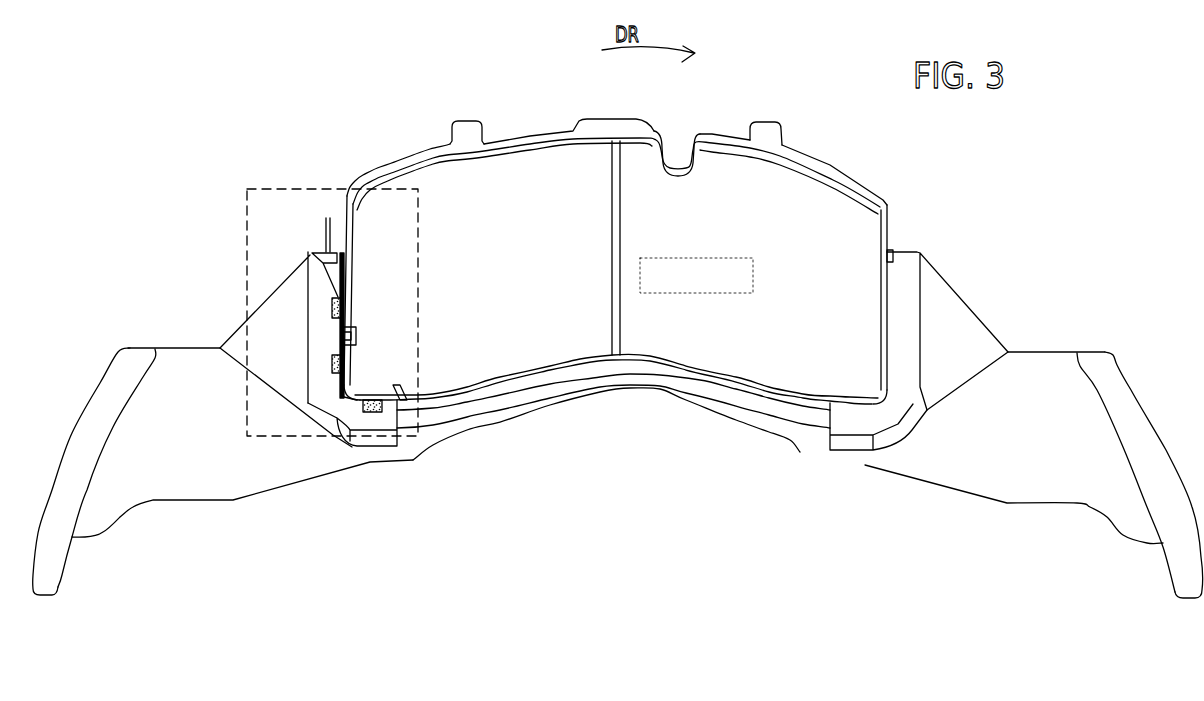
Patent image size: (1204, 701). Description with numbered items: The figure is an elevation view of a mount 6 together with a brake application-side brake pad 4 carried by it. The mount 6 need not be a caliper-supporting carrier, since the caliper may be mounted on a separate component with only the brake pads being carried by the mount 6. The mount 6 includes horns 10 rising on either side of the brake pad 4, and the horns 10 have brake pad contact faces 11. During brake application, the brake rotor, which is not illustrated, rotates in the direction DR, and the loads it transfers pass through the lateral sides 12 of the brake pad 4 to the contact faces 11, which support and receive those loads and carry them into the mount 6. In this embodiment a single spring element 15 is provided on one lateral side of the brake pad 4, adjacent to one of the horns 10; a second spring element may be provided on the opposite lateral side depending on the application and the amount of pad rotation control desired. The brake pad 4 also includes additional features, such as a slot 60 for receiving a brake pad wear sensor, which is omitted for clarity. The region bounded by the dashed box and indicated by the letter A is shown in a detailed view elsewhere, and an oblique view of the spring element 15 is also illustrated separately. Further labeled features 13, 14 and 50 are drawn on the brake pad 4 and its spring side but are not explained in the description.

The brake pad 4 is at (833, 168).
The brake carrier 6 is at (1052, 350).
The carrier arm 10 is at (265, 303).
The abutment surface 11 is at (338, 348).
The backing plate side edge 12 is at (347, 207).
The spring clip 13 is at (328, 277).
The spring tab 14 is at (328, 218).
The clip lower end 15 is at (340, 373).
The retaining lug 50 is at (468, 122).
The notch 60 is at (681, 135).
The detail region A is at (418, 242).